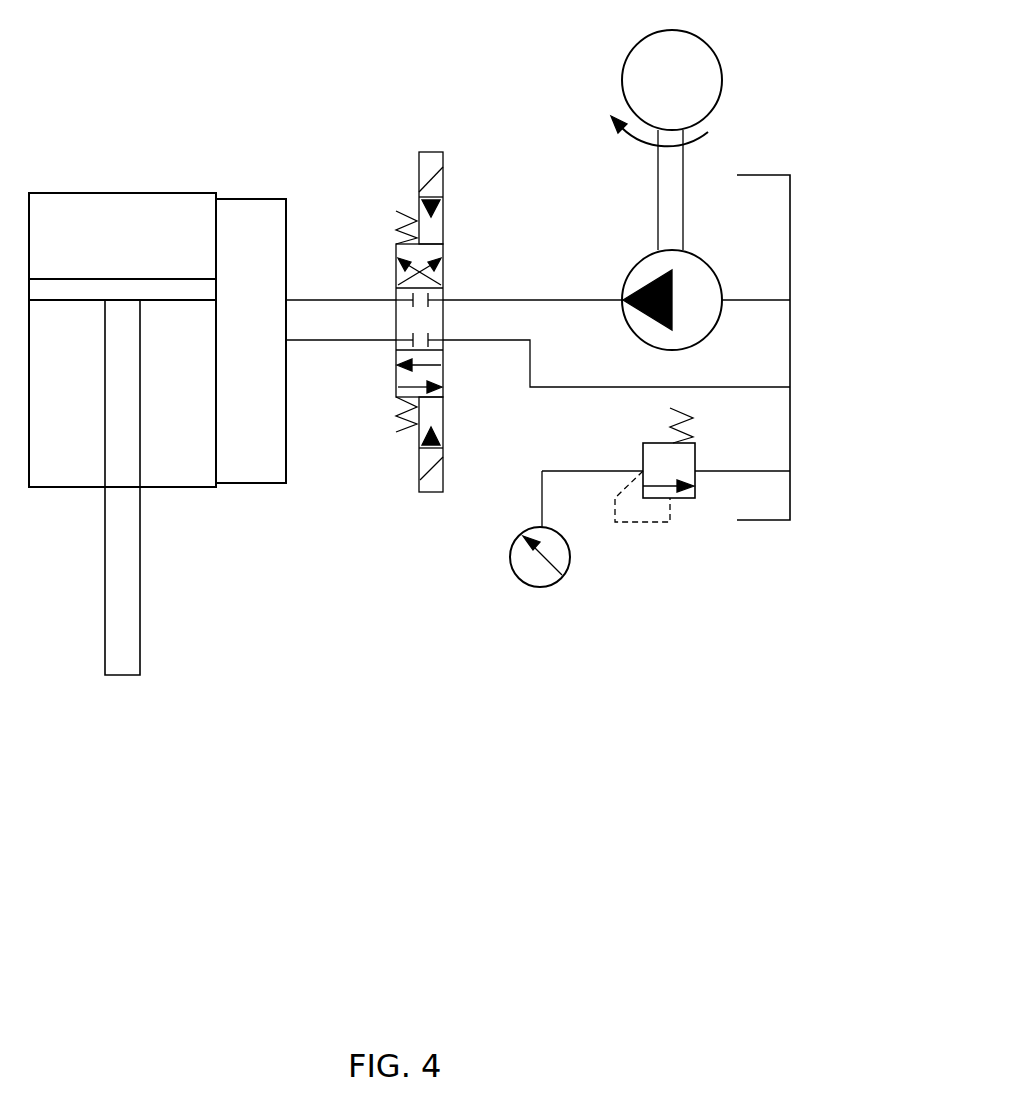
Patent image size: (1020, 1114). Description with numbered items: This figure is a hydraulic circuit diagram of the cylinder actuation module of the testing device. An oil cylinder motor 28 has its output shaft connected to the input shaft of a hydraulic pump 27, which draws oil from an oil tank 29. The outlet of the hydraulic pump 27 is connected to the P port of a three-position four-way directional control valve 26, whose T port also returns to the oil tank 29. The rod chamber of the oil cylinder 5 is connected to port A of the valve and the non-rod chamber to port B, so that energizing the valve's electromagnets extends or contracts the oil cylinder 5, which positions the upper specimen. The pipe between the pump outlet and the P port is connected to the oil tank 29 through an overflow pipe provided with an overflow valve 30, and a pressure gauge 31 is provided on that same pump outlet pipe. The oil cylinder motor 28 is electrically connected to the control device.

The oil cylinder 5 is at (125, 463).
The three-position four-way directional control valve 26 is at (430, 368).
The hydraulic pump 27 is at (693, 290).
The oil cylinder motor 28 is at (705, 67).
The oil tank 29 is at (767, 522).
The overflow valve 30 is at (682, 497).
The pressure gauge 31 is at (540, 577).